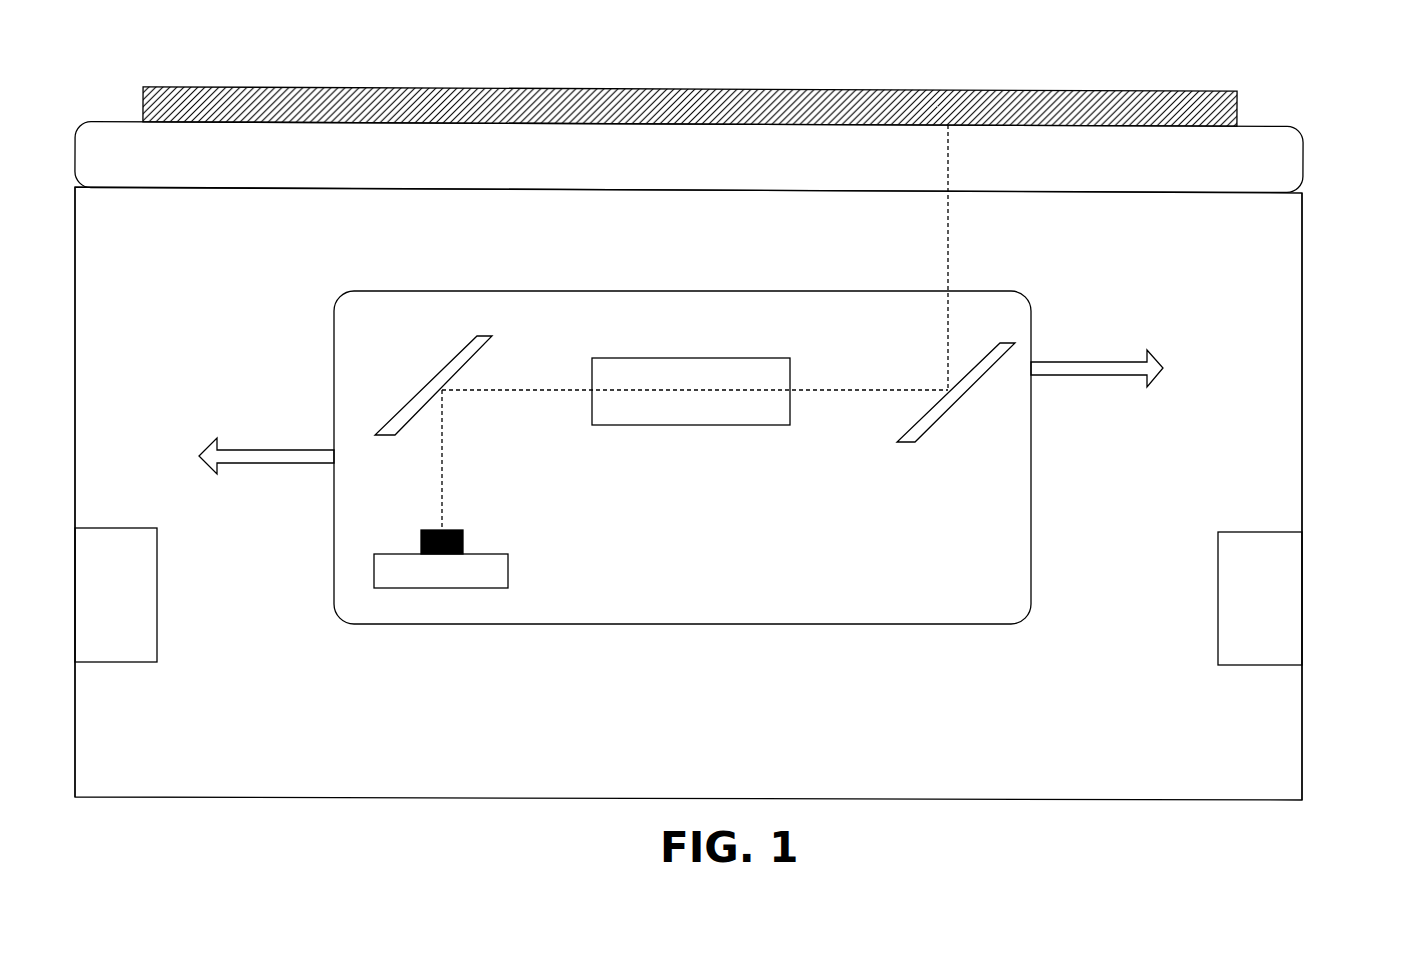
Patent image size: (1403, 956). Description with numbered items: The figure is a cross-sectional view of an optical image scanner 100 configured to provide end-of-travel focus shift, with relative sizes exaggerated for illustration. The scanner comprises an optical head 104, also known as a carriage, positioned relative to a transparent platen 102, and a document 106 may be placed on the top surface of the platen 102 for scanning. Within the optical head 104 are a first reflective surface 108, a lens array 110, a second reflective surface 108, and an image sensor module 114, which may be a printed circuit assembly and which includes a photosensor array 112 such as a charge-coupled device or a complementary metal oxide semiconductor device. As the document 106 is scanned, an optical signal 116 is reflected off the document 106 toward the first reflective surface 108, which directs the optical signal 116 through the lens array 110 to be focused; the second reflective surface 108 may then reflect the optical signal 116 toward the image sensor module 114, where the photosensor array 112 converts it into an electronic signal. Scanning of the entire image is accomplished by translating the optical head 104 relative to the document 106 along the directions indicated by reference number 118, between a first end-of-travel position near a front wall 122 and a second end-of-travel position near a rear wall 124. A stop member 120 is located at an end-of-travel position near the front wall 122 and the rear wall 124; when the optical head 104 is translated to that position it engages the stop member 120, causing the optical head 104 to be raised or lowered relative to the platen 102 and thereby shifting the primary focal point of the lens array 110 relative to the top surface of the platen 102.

The optical image scanner 100 is at (1261, 60).
The transparent platen 102 is at (1303, 162).
The optical head 104 is at (1031, 460).
The document 106 is at (1071, 89).
The reflective surface 108 is at (412, 398).
The lens array 110 is at (733, 425).
The photosensor array 112 is at (462, 542).
The image sensor module 114 is at (550, 568).
The optical signal 116 is at (912, 233).
The translation directions 118 is at (273, 450).
The stop member 120 is at (115, 662).
The front wall 122 is at (75, 295).
The rear wall 124 is at (1302, 432).